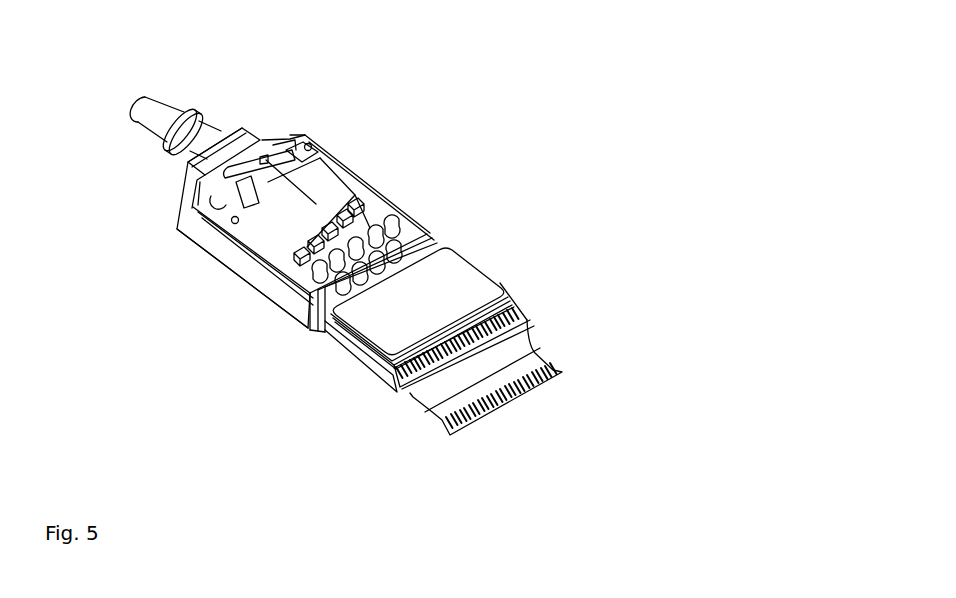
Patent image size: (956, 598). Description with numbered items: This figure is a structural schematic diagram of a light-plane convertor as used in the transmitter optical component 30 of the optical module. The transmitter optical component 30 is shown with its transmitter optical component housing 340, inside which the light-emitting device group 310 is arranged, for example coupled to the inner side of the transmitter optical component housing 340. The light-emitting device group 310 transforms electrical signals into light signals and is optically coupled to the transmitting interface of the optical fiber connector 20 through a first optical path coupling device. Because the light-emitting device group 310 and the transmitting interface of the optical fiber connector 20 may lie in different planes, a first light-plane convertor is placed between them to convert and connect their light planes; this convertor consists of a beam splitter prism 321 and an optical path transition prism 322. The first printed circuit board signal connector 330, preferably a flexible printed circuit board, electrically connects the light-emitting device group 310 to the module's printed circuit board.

The optical fiber connector 20 is at (158, 110).
The transmitter optical component 30 is at (287, 348).
The light-emitting device group 310 is at (428, 221).
The beam splitter prism 321 is at (325, 196).
The optical path transition prism 322 is at (264, 160).
The first printed circuit board signal connector 330 is at (523, 392).
The transmitter optical component housing 340 is at (255, 268).